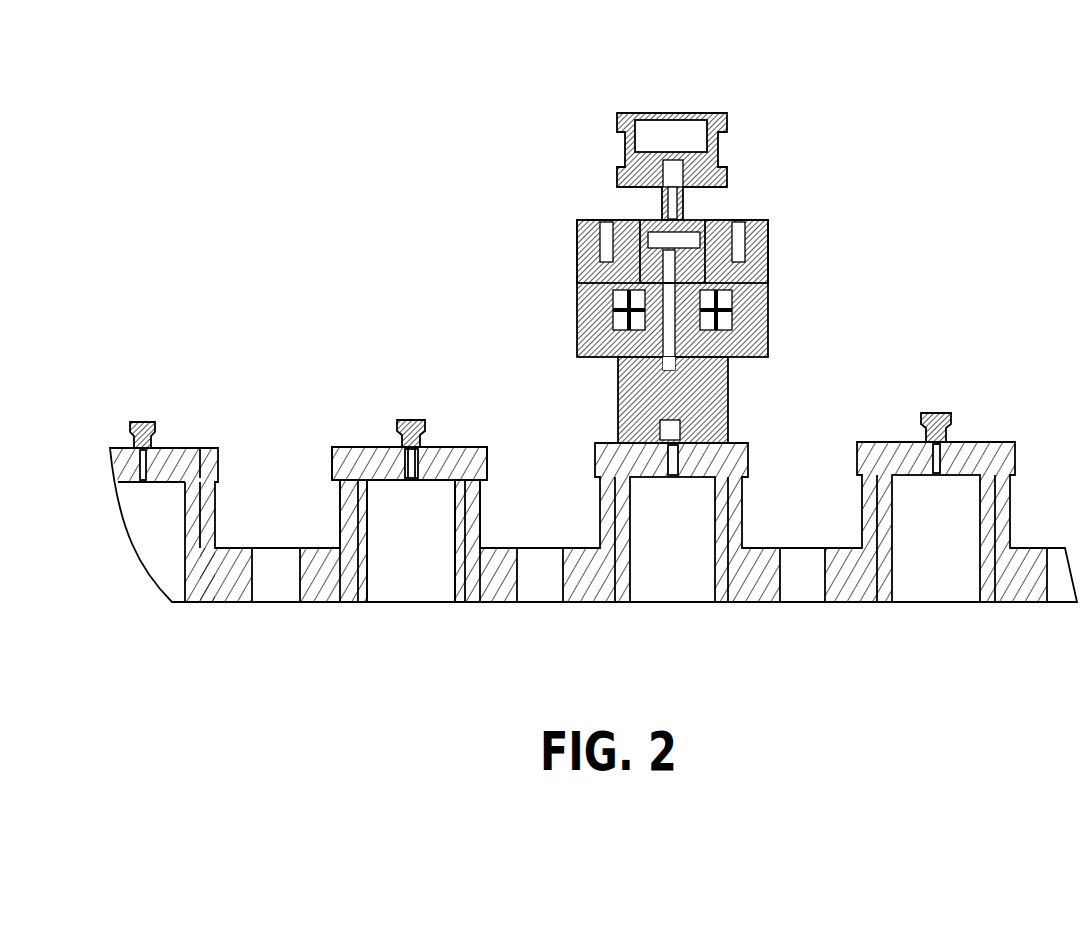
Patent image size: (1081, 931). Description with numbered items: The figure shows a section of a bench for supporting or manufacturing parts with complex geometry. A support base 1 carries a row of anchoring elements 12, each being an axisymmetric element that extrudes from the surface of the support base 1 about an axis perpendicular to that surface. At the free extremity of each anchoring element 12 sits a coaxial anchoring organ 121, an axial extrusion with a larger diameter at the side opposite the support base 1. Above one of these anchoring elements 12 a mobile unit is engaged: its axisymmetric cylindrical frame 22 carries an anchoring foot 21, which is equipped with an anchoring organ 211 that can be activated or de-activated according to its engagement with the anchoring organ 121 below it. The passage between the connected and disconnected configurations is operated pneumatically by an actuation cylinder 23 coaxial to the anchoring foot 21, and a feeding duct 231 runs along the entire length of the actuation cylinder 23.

The support base 1 is at (218, 603).
The anchoring element 12 is at (337, 487).
The anchoring organ 121 is at (412, 418).
The anchoring foot 21 is at (770, 305).
The anchoring organ 211 is at (728, 378).
The axisymmetric cylindrical frame 22 is at (577, 268).
The actuation cylinder 23 is at (578, 125).
The feeding duct 231 is at (668, 130).